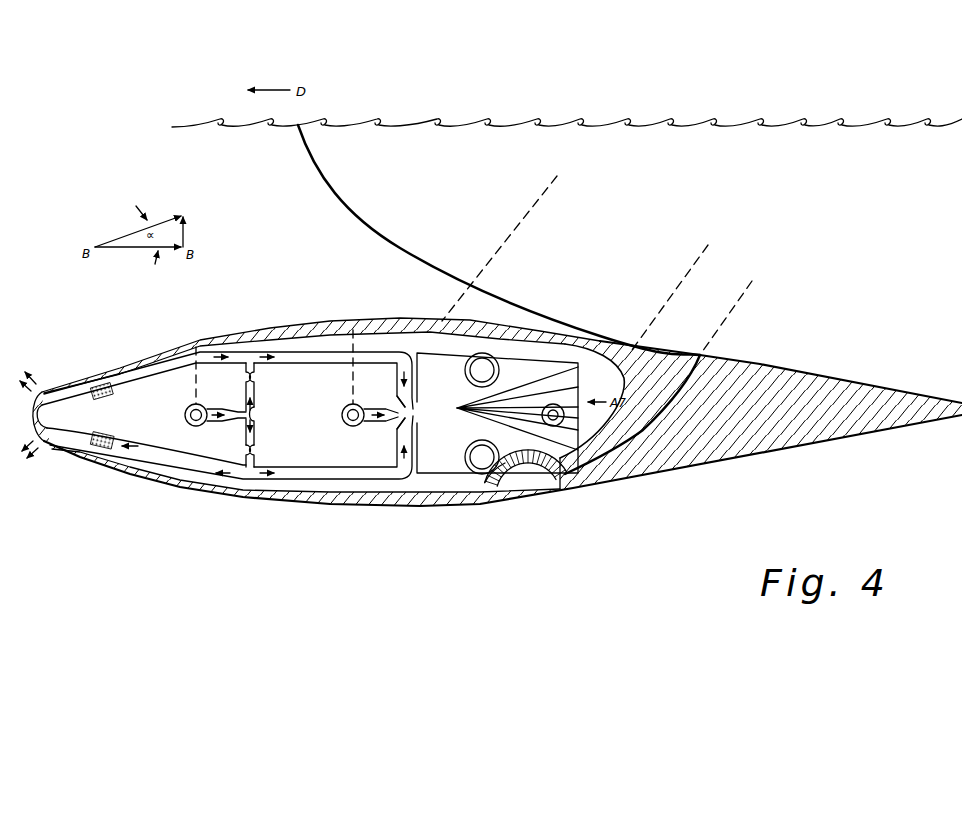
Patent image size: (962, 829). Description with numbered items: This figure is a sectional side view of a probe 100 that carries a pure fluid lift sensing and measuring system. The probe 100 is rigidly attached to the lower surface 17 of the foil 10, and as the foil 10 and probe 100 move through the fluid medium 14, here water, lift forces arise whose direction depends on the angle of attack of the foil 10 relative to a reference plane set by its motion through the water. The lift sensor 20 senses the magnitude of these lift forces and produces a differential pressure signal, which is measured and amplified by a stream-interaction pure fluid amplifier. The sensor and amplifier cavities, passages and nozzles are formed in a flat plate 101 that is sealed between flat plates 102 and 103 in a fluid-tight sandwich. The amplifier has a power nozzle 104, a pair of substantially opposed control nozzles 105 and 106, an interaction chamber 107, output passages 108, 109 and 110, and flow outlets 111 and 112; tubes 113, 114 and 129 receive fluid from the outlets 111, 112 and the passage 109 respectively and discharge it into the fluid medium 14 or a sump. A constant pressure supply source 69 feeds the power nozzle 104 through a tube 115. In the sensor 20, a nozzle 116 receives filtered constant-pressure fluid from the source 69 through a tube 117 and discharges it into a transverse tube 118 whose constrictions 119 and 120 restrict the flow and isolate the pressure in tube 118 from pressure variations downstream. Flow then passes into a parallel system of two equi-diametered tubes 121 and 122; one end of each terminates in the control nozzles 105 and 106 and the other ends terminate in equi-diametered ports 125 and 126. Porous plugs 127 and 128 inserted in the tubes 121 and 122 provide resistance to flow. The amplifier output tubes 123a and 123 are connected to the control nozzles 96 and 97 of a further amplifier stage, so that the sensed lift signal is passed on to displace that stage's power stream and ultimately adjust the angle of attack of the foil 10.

The foil 10 is at (882, 218).
The fluid medium 14 is at (447, 110).
The lower surface 17 is at (320, 172).
The lift sensor 20 is at (347, 498).
The constant pressure supply source 69 is at (511, 233).
The control nozzle 96 is at (673, 290).
The control nozzle 97 is at (734, 307).
The probe 100 is at (298, 510).
The flat plate 101 is at (516, 488).
The flat plate 102 is at (577, 487).
The flat plate 103 is at (487, 480).
The power nozzle 104 is at (366, 427).
The control nozzle 105 is at (388, 436).
The control nozzle 106 is at (385, 383).
The interaction chamber 107 is at (431, 420).
The output passage 108 is at (498, 433).
The output passage 109 is at (533, 420).
The output passage 110 is at (512, 386).
The flow outlet 111 is at (464, 462).
The flow outlet 112 is at (464, 374).
The tube 113 is at (478, 445).
The tube 114 is at (487, 365).
The tube 115 is at (352, 390).
The nozzle 116 is at (206, 423).
The tube 117 is at (195, 395).
The transverse tube 118 is at (260, 422).
The tube constriction 119 is at (246, 383).
The tube constriction 120 is at (260, 451).
The tube 121 is at (145, 455).
The tube 122 is at (131, 380).
The output tube 123 is at (662, 408).
The output tube 123a is at (621, 359).
The port 125 is at (46, 445).
The port 126 is at (43, 391).
The porous plug 127 is at (104, 434).
The porous plug 128 is at (108, 397).
The tube 129 is at (566, 417).